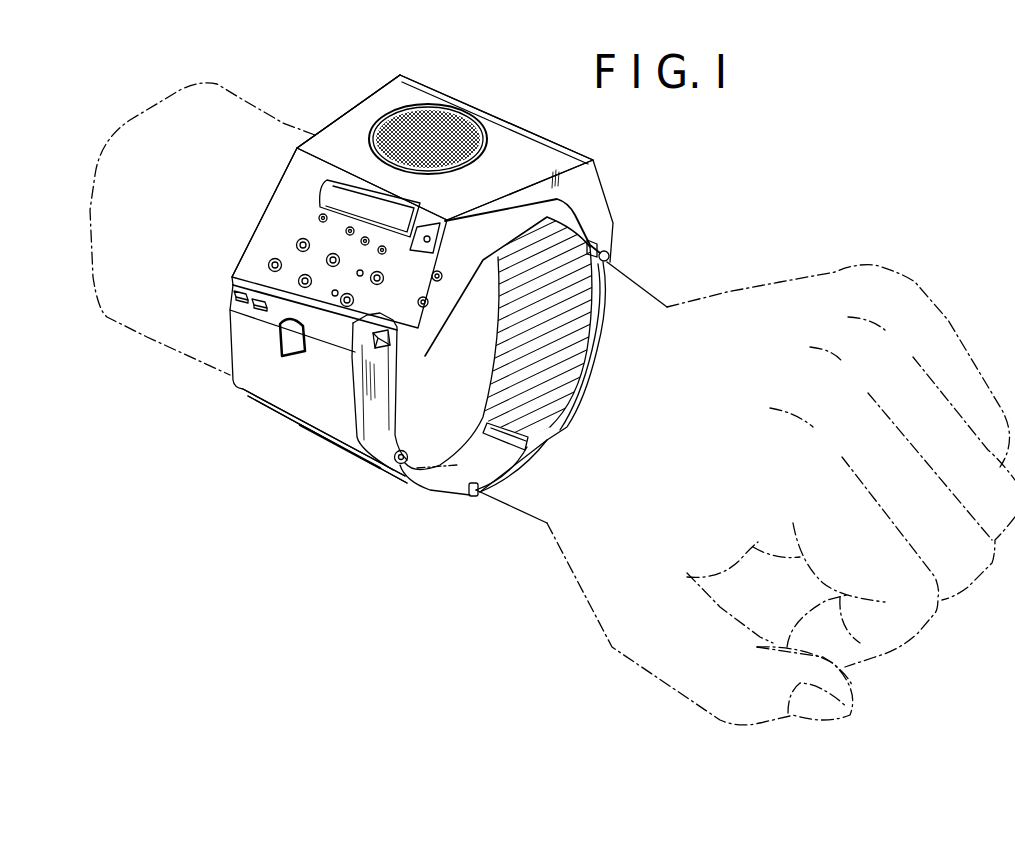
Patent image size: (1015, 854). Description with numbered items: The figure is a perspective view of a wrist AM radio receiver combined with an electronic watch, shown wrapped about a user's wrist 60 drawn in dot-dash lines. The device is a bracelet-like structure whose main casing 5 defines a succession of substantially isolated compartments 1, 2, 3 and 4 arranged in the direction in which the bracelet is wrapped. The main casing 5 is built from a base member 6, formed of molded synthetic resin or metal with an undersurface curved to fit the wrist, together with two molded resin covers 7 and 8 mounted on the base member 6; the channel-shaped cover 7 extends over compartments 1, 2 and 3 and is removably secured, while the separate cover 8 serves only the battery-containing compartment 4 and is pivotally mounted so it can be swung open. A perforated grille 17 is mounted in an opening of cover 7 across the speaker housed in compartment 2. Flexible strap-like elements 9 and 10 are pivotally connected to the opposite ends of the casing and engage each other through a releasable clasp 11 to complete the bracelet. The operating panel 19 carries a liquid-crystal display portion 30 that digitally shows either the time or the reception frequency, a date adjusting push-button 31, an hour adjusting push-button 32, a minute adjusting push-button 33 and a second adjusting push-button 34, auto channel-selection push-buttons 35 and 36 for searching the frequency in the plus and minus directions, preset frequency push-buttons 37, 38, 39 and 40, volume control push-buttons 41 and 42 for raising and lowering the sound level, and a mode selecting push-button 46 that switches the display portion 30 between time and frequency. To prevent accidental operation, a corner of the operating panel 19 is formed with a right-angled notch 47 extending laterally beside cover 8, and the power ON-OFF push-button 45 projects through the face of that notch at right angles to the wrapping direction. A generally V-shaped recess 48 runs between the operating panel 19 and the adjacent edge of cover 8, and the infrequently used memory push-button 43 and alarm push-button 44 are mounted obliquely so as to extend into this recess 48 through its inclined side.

The compartment 1 is at (600, 200).
The compartment 2 is at (363, 118).
The compartment 3 is at (263, 215).
The compartment 4 is at (243, 390).
The main casing 5 is at (340, 108).
The base member 6 is at (478, 262).
The cover 7 is at (512, 128).
The cover 8 is at (272, 400).
The strap-like element 9 is at (387, 470).
The strap-like element 10 is at (580, 340).
The clasp 11 is at (457, 463).
The grille 17 is at (443, 127).
The operating panel 19 is at (253, 233).
The display portion 30 is at (330, 183).
The date adjusting push-button 31 is at (321, 214).
The hour adjusting push-button 32 is at (349, 227).
The minute adjusting push-button 33 is at (367, 237).
The second adjusting push-button 34 is at (385, 253).
The auto channel-selection push-button 35 is at (378, 285).
The auto channel-selection push-button 36 is at (342, 307).
The preset frequency push-button 37 is at (268, 262).
The preset frequency push-button 38 is at (301, 238).
The preset frequency push-button 39 is at (300, 287).
The preset frequency push-button 40 is at (331, 267).
The volume control push-button 41 is at (442, 282).
The volume control push-button 42 is at (427, 308).
The memory push-button 43 is at (238, 302).
The alarm push-button 44 is at (233, 293).
The power ON-OFF push-button 45 is at (380, 343).
The mode selecting push-button 46 is at (440, 238).
The notch 47 is at (360, 350).
The V-shaped recess 48 is at (365, 353).
The user's wrist 60 is at (650, 290).